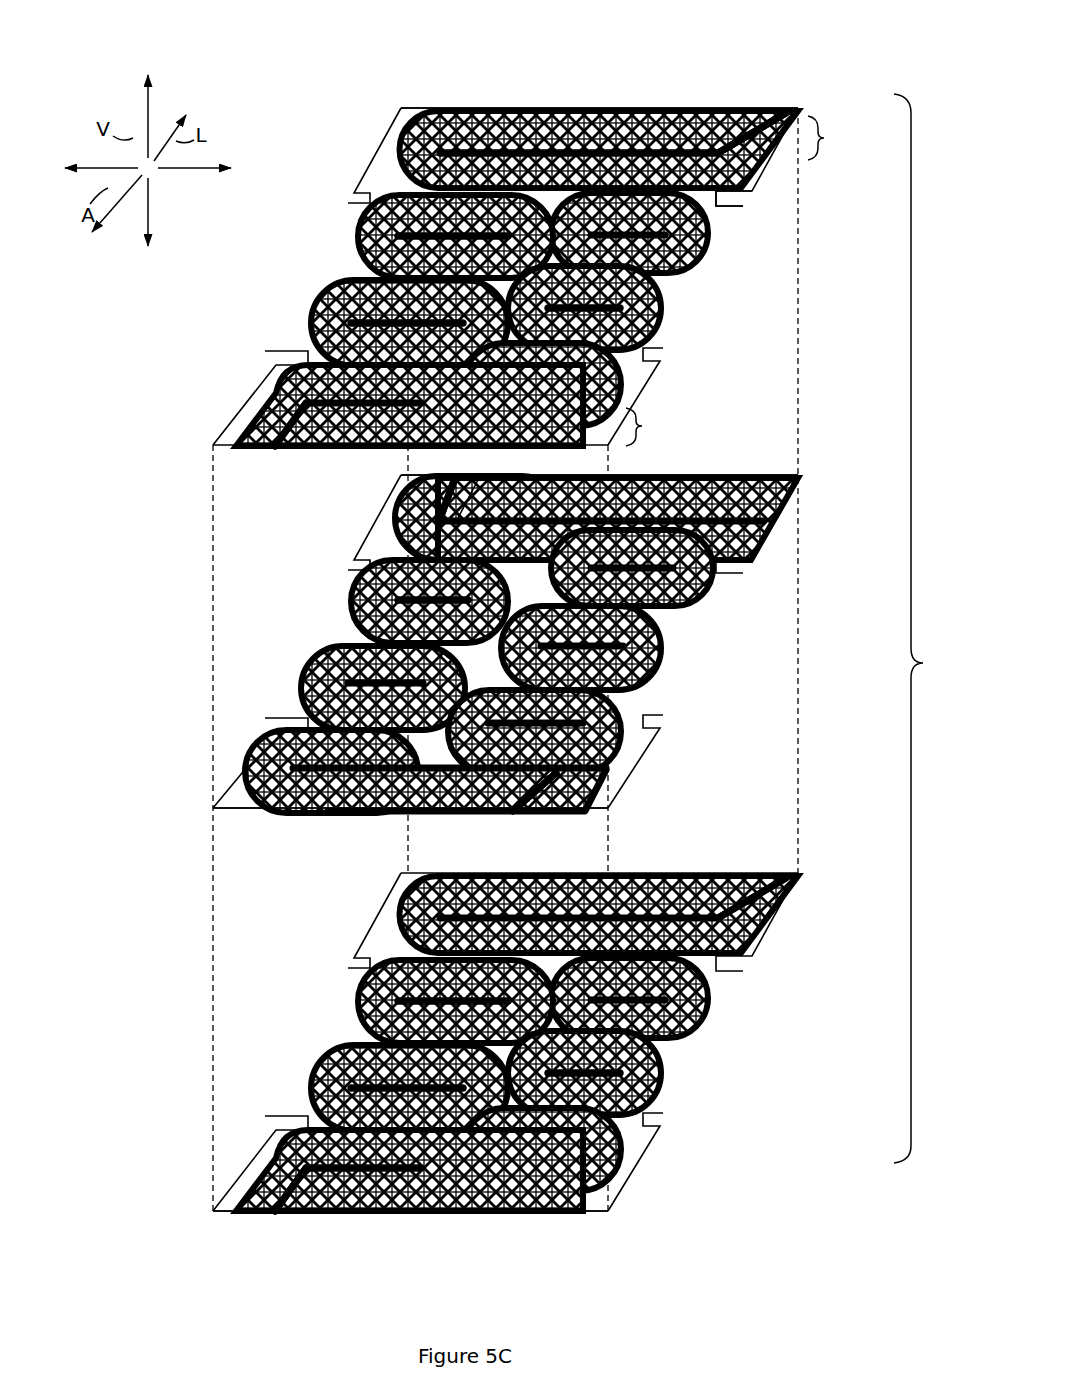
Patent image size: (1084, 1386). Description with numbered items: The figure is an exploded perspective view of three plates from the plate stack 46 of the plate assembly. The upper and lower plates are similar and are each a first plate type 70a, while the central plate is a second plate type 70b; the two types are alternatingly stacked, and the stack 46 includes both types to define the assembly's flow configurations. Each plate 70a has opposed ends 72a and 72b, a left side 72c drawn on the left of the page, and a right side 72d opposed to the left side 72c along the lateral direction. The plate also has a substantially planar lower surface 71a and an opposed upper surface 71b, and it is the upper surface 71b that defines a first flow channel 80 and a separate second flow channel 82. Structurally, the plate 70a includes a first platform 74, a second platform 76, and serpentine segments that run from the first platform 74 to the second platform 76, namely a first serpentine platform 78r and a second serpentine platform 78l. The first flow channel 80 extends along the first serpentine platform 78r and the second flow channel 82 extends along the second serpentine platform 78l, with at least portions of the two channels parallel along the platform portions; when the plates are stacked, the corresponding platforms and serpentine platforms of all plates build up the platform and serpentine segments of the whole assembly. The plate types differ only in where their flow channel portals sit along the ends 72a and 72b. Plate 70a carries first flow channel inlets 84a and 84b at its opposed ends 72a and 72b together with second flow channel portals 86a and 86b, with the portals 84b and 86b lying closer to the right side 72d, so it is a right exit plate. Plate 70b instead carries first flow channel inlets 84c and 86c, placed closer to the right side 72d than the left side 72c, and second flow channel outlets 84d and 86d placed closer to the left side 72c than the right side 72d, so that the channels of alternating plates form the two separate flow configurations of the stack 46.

The plate stack 46 is at (587, 652).
The first plate type 70a is at (290, 72).
The second plate type 70b is at (185, 612).
The lower surface 71a is at (722, 190).
The upper surface 71b is at (752, 160).
The first end 72a is at (246, 458).
The second end 72b is at (430, 80).
The left side 72c is at (234, 366).
The right side 72d is at (656, 360).
The first platform 74 is at (646, 1197).
The second platform 76 is at (783, 959).
The second serpentine platform 78l is at (330, 262).
The first serpentine platform 78r is at (692, 257).
The first flow channel 80 is at (642, 290).
The second flow channel 82 is at (378, 152).
The first flow channel inlet 84a is at (283, 440).
The first flow channel inlet 84b is at (770, 100).
The first flow channel inlet 84c is at (538, 805).
The second flow channel outlet 84d is at (470, 470).
The second flow channel portal 86a is at (262, 410).
The second flow channel portal 86b is at (722, 100).
The first flow channel inlet 86c is at (515, 803).
The second flow channel outlet 86d is at (425, 470).